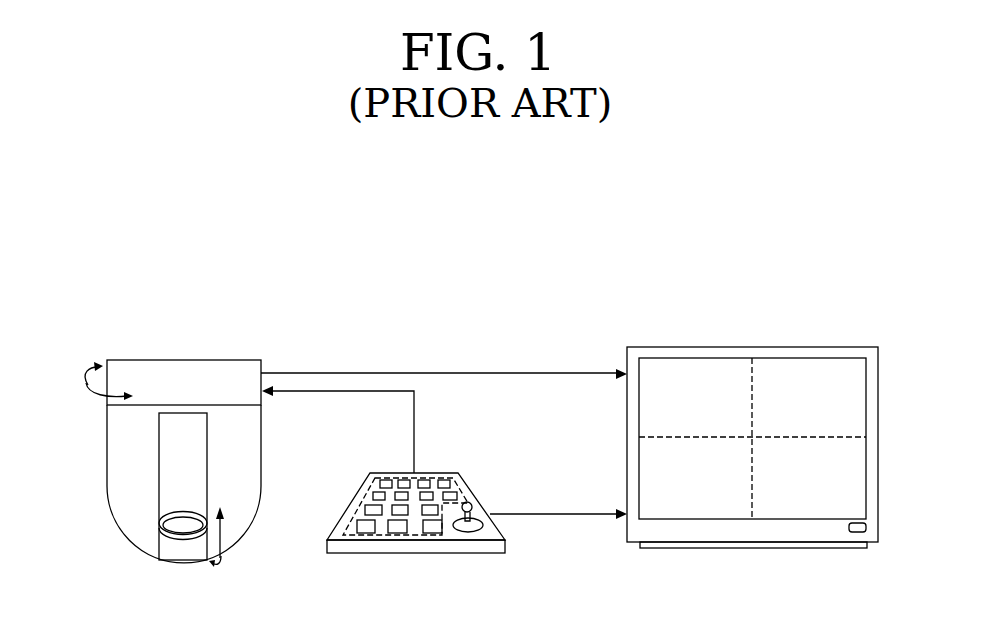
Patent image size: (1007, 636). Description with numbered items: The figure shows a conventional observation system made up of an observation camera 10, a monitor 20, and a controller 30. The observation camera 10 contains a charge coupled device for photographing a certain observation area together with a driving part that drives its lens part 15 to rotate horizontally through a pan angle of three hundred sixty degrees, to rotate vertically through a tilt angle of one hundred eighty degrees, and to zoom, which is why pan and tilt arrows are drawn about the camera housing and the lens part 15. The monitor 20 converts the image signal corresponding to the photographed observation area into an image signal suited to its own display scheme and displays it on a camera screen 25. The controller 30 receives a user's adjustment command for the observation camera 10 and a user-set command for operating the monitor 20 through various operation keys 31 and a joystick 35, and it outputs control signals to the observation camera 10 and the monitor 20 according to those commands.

The observation camera 10 is at (182, 358).
The lens part 15 is at (183, 532).
The monitor 20 is at (751, 346).
The camera screen 25 is at (826, 367).
The controller 30 is at (448, 473).
The operation keys 31 is at (363, 535).
The joystick 35 is at (468, 530).